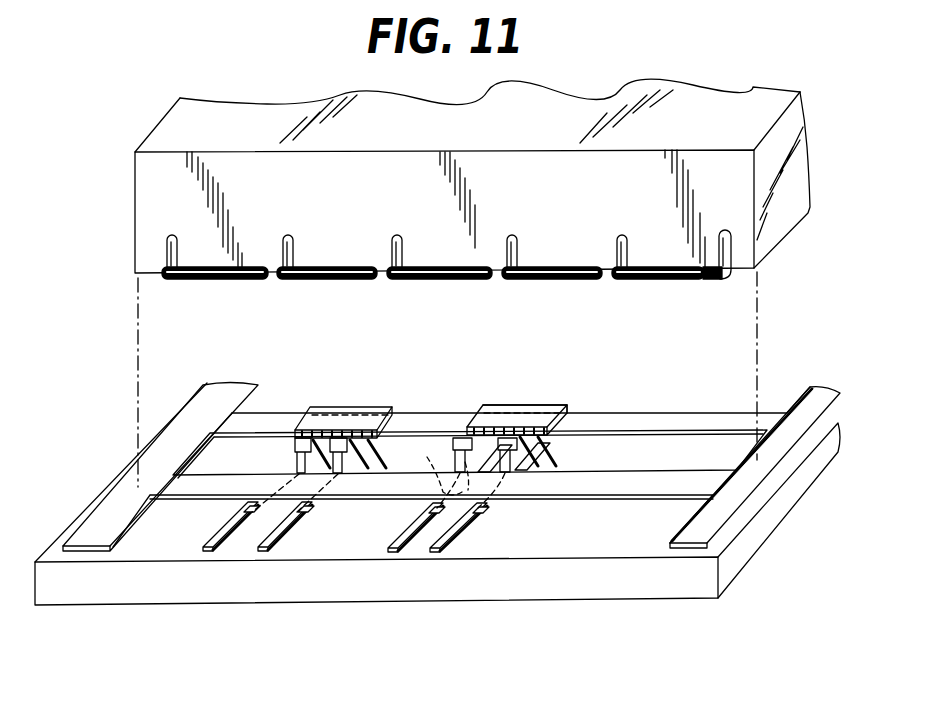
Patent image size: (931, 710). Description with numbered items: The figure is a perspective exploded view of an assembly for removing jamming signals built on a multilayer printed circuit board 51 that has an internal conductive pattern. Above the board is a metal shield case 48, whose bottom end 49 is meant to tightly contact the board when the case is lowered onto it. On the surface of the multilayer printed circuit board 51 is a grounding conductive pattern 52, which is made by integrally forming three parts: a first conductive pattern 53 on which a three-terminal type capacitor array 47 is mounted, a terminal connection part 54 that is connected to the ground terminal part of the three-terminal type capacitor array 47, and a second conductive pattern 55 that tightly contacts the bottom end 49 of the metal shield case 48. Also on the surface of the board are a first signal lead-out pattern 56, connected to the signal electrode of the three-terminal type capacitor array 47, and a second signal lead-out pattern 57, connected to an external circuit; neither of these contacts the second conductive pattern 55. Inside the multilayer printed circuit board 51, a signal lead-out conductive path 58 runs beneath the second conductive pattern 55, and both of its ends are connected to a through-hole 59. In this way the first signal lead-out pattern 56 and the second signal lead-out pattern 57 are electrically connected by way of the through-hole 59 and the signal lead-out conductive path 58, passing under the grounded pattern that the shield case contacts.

The three-terminal type capacitor array 47 is at (562, 410).
The metal shield case 48 is at (143, 202).
The bottom end 49 is at (215, 282).
The multilayer printed circuit board 51 is at (645, 597).
The grounding conductive pattern 52 is at (748, 482).
The first conductive pattern 53 is at (683, 413).
The terminal connection part 54 is at (518, 472).
The second conductive pattern 55 is at (628, 470).
The first signal lead-out pattern 56 is at (498, 436).
The second signal lead-out pattern 57 is at (428, 549).
The signal lead-out conductive path 58 is at (456, 466).
The through-hole 59 is at (455, 447).